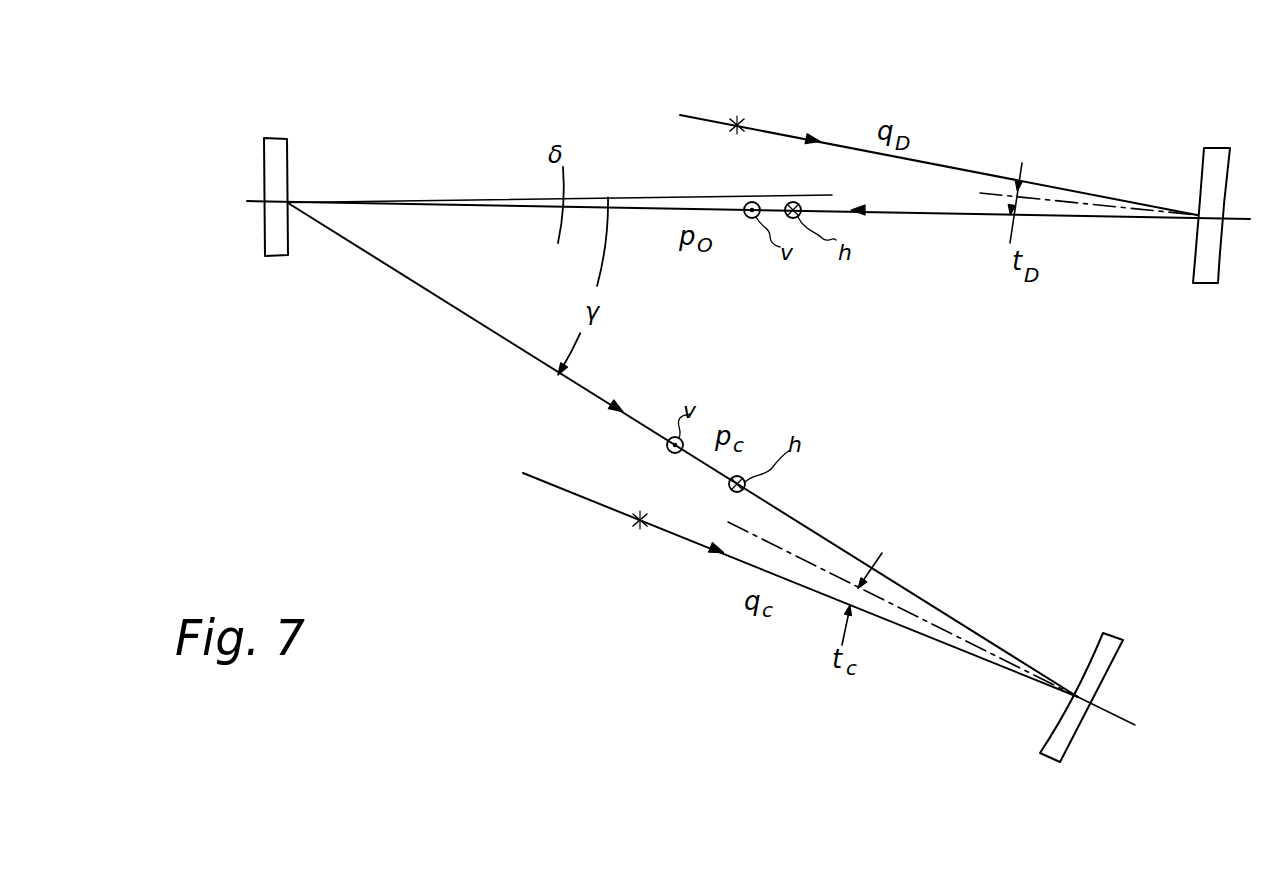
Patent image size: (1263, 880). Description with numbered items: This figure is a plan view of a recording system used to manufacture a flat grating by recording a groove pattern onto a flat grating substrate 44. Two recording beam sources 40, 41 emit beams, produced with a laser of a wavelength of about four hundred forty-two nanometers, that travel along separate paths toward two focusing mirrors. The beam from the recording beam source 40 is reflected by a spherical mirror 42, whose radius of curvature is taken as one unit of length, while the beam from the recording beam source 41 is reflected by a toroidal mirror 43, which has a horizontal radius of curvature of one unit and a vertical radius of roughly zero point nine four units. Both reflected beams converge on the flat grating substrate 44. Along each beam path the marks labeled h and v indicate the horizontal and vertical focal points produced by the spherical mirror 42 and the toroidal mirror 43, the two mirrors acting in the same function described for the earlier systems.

The recording beam source 40 is at (638, 528).
The recording beam source 41 is at (737, 122).
The spherical mirror 42 is at (1103, 633).
The toroidal mirror 43 is at (1213, 148).
The flat grating substrate 44 is at (280, 138).